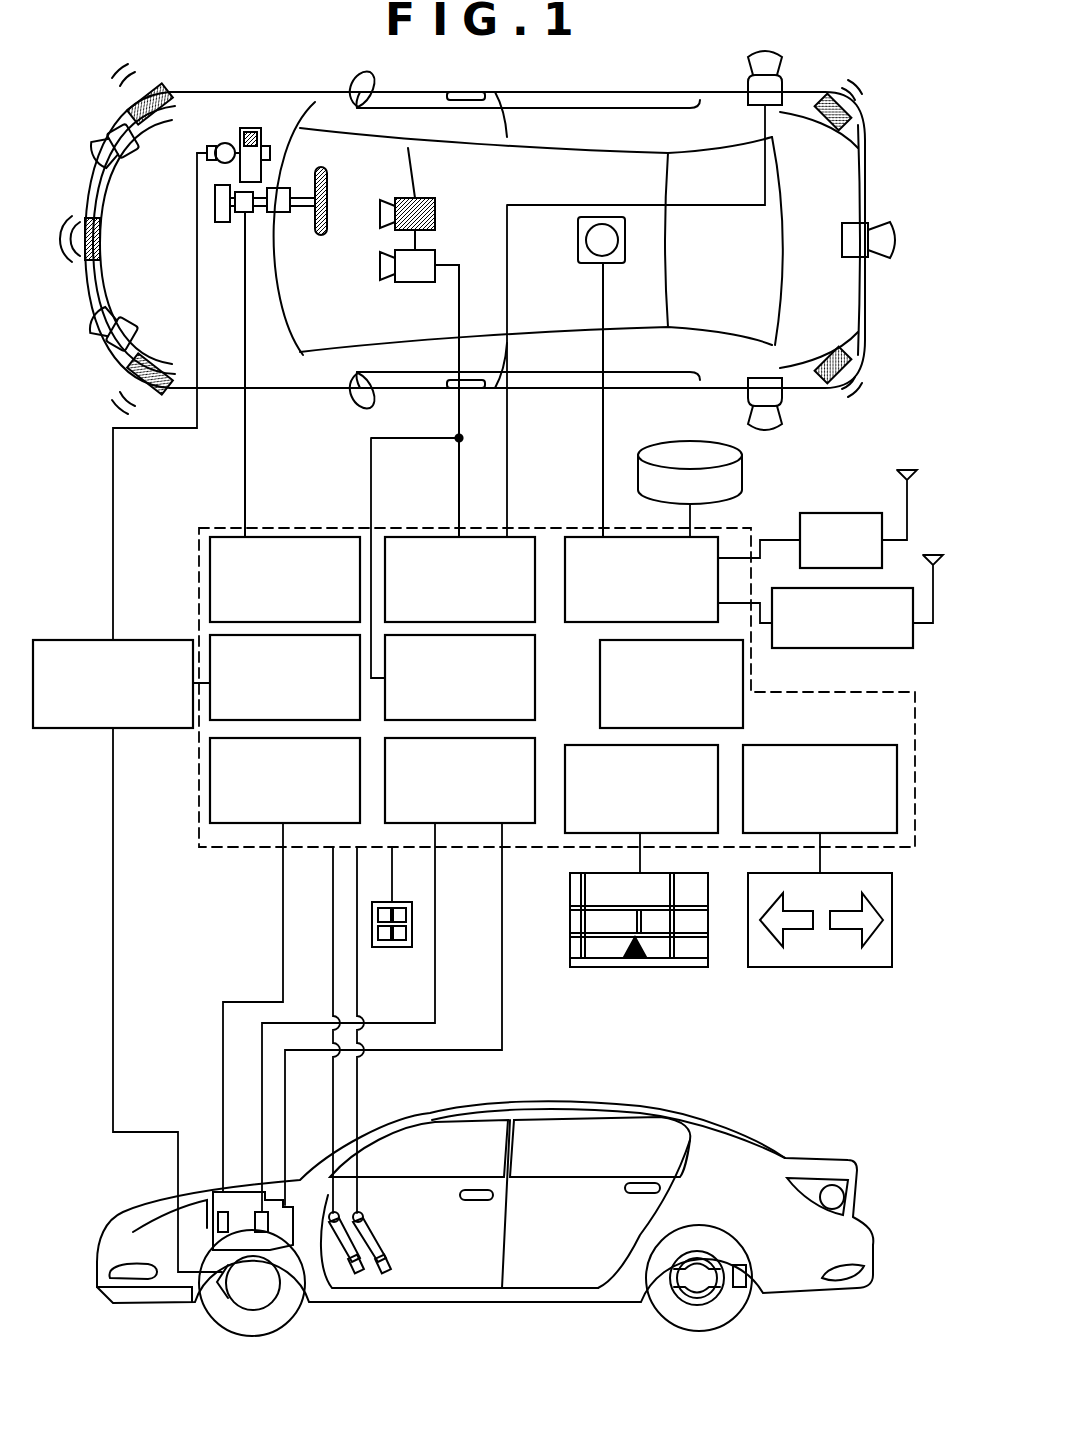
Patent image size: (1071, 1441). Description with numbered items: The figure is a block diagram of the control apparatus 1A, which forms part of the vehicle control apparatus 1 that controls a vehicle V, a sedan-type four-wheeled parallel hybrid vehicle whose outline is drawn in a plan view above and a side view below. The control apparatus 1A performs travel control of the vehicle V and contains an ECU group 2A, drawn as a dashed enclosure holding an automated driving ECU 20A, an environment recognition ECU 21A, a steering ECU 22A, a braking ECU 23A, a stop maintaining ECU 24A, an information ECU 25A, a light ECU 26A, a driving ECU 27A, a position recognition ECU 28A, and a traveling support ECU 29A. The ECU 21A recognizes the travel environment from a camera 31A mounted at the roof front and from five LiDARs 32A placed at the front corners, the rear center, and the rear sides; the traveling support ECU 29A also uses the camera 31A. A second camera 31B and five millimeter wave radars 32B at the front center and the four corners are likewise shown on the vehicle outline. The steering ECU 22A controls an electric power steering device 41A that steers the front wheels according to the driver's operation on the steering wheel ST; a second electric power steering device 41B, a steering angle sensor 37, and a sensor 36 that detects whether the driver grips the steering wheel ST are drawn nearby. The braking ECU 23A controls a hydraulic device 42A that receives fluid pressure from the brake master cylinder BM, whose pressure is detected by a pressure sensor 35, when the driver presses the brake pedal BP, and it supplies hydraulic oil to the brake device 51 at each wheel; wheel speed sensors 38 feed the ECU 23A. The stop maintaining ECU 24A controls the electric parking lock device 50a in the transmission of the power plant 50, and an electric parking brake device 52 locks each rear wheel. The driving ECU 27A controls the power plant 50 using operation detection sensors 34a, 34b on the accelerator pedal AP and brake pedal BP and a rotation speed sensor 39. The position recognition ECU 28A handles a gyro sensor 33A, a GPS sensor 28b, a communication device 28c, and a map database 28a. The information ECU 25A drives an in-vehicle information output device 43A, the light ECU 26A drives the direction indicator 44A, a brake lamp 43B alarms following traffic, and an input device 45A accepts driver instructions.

The vehicle control apparatus 1 is at (872, 391).
The vehicle V is at (872, 147).
The control apparatus 1A is at (842, 476).
The ECU group 2A is at (330, 528).
The automated driving ECU 20A is at (751, 678).
The environment recognition ECU 21A is at (527, 537).
The steering ECU 22A is at (280, 537).
The braking ECU 23A is at (215, 722).
The stop maintaining ECU 24A is at (248, 823).
The information ECU 25A is at (575, 833).
The light ECU 26A is at (857, 745).
The driving ECU 27A is at (468, 823).
The position recognition ECU 28A is at (710, 537).
The database 28a is at (680, 442).
The GPS sensor 28b is at (830, 513).
The communication device 28c is at (855, 648).
The traveling support ECU 29A is at (560, 672).
The camera 31A is at (400, 283).
The camera 31B is at (435, 203).
The LiDAR 32A is at (125, 170).
The millimeter wave radar 32B is at (188, 80).
The gyro sensor 33A is at (582, 268).
The operation detection sensor 34a is at (272, 1190).
The operation detection sensor 34b is at (370, 1225).
The pressure sensor 35 is at (250, 128).
The sensor 36 is at (330, 178).
The steering angle sensor 37 is at (222, 222).
The wheel speed sensor 38 is at (742, 1290).
The rotation speed sensor 39 is at (245, 1192).
The electric power steering device 41A is at (260, 212).
The electric power steering device 41B is at (258, 132).
The hydraulic device 42A is at (80, 640).
The information output device 43A is at (668, 967).
The information output device 43B is at (830, 1185).
The information output device 44A is at (830, 967).
The input device 45A is at (392, 947).
The power plant 50 is at (300, 1300).
The electric parking lock device 50a is at (212, 1190).
The brake device 51 is at (225, 1298).
The electric parking brake device 52 is at (680, 1306).
The brake master cylinder BM is at (228, 142).
The steering wheel ST is at (322, 170).
The accelerator pedal AP is at (365, 1275).
The brake pedal BP is at (393, 1275).